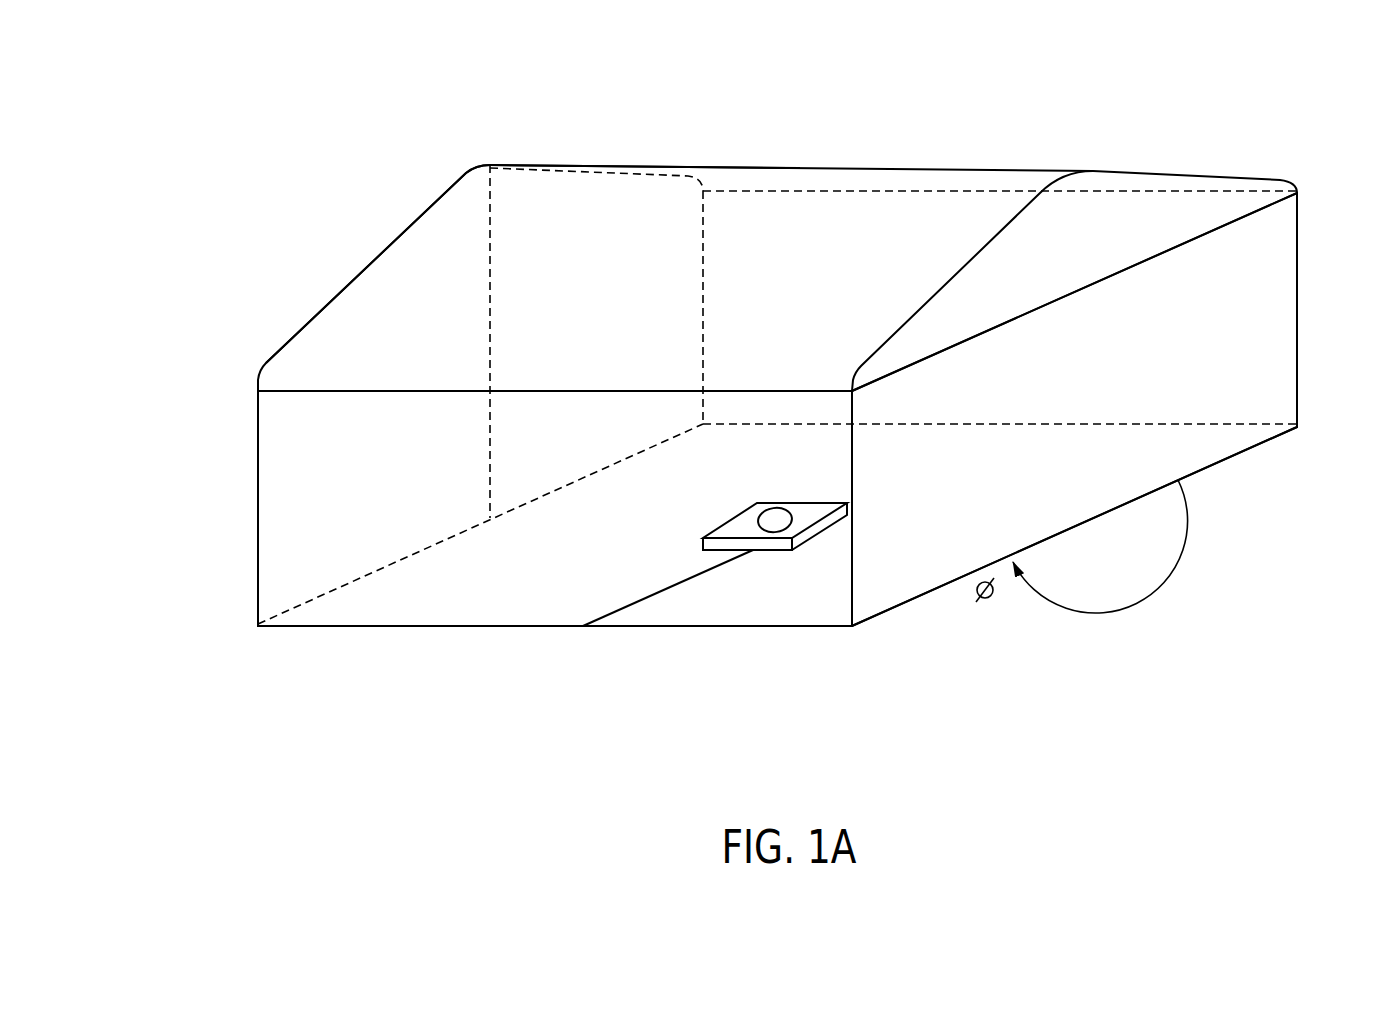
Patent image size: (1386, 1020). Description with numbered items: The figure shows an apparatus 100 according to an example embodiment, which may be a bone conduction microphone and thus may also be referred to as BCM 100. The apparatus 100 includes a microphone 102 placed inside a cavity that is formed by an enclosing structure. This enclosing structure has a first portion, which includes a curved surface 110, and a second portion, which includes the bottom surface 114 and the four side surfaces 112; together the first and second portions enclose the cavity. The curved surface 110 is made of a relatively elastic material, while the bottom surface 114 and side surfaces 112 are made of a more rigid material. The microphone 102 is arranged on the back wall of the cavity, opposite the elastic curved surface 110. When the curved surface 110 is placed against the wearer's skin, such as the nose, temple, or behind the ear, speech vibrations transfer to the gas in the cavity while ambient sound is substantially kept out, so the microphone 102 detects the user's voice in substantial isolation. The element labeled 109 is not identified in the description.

The apparatus 100 is at (230, 157).
The microphone 102 is at (800, 540).
The edge 109 is at (453, 563).
The curved surface 110 is at (412, 290).
The side surfaces 112 is at (357, 378).
The bottom surface 114 is at (565, 582).